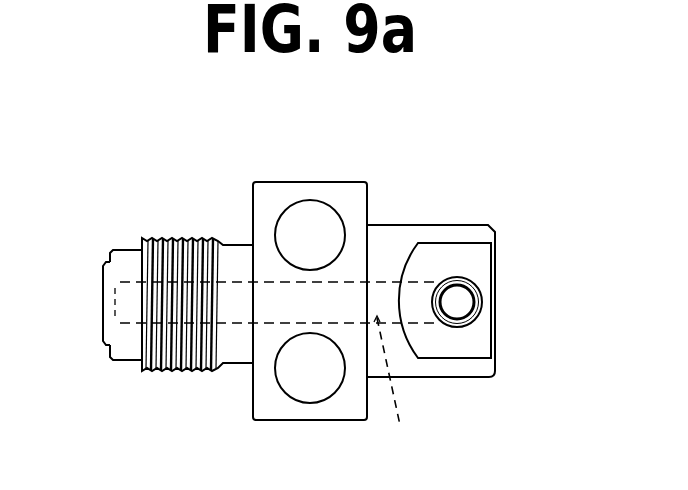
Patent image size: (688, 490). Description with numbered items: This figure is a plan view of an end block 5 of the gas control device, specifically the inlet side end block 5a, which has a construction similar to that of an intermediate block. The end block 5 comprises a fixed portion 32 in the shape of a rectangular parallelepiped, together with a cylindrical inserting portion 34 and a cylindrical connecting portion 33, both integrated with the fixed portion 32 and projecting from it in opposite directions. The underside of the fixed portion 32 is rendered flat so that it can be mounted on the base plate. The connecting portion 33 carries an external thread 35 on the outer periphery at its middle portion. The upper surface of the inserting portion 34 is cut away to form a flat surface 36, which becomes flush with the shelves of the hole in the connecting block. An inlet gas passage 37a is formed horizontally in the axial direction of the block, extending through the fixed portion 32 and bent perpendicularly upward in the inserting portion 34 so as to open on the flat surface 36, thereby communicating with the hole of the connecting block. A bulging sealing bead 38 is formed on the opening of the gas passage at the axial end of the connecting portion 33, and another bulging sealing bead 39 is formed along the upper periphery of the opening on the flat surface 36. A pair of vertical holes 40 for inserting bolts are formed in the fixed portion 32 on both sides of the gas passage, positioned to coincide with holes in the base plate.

The end block 5 is at (413, 176).
The inlet side end block 5a is at (430, 368).
The fixed portion 32 is at (348, 180).
The connecting portion 33 is at (140, 240).
The inserting portion 34 is at (452, 223).
The external thread 35 is at (185, 240).
The flat surface 36 is at (467, 253).
The inlet gas passage 37a is at (422, 383).
The sealing bead 38 is at (103, 347).
The sealing bead 39 is at (480, 317).
The vertical holes 40 is at (290, 212).